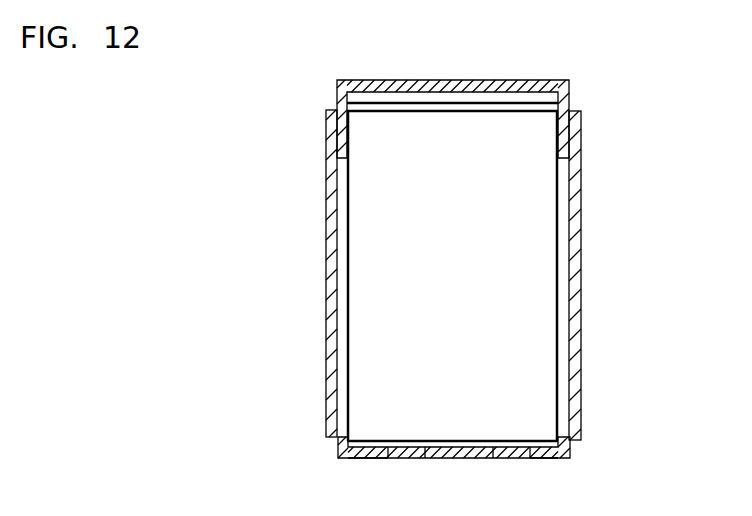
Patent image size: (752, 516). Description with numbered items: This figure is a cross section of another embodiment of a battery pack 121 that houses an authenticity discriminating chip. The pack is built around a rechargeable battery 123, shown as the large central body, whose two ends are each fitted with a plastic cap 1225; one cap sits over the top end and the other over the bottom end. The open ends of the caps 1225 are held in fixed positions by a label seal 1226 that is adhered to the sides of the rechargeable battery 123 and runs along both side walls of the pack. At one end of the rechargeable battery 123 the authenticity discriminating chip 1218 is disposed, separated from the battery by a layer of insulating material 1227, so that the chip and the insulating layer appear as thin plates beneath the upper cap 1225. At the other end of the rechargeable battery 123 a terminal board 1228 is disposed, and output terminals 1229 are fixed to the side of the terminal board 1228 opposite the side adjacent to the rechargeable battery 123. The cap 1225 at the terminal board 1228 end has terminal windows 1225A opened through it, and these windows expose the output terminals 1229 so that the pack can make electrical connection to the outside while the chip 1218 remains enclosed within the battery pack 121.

The battery pack 121 is at (615, 73).
The rechargeable battery 123 is at (471, 280).
The authenticity discriminating chip 1218 is at (410, 100).
The plastic cap 1225 is at (500, 90).
The terminal window 1225A is at (384, 467).
The label seal 1226 is at (330, 278).
The insulating material 1227 is at (440, 113).
The terminal board 1228 is at (470, 443).
The output terminal 1229 is at (408, 458).